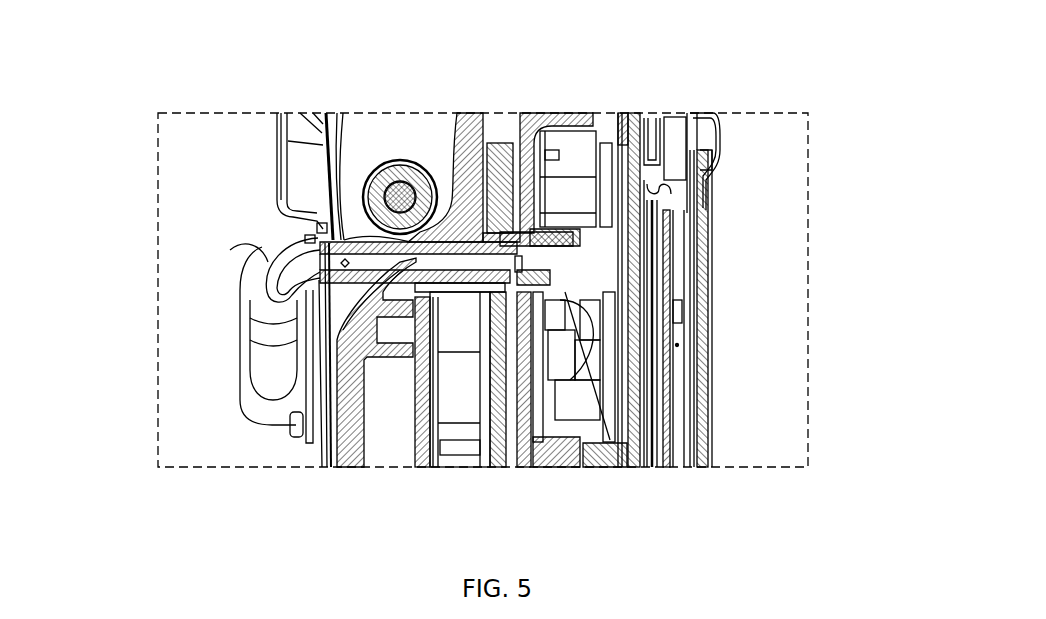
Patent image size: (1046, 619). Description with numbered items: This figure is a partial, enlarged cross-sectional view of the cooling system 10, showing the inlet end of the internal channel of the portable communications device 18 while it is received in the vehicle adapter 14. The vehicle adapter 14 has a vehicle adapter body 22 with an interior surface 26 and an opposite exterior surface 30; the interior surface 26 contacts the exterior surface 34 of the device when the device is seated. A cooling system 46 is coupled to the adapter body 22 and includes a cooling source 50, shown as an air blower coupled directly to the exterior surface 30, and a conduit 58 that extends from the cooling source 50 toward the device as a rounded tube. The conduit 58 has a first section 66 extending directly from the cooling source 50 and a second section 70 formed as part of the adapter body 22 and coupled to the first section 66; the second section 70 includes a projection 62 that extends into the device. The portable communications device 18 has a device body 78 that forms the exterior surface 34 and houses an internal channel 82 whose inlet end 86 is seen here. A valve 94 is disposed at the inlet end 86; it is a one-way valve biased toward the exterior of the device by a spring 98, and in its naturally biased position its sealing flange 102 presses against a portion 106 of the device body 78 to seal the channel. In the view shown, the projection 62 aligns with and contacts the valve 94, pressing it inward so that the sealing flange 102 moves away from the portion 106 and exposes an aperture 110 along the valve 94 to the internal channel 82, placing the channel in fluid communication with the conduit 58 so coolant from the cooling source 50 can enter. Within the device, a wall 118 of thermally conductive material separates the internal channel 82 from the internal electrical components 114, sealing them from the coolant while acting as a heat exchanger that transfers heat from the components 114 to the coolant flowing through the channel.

The cooling system 10 is at (111, 69).
The vehicle adapter 14 is at (360, 102).
The portable communications device 18 is at (690, 94).
The vehicle adapter body 22 is at (350, 460).
The interior surface 26 is at (478, 112).
The exterior surface 30 is at (327, 461).
The exterior surface 34 is at (512, 458).
The cooling system 46 is at (266, 236).
The cooling source 50 is at (238, 393).
The conduit 58 is at (264, 312).
The projection 62 is at (480, 218).
The first section 66 is at (258, 268).
The second section 70 is at (313, 218).
The device body 78 is at (531, 92).
The internal channel 82 is at (706, 322).
The inlet end 86 is at (600, 210).
The valve 94 is at (613, 458).
The spring 98 is at (576, 458).
The sealing flange 102 is at (577, 207).
The portion 106 is at (498, 112).
The aperture 110 is at (666, 458).
The internal electrical components 114 is at (703, 283).
The wall 118 is at (702, 382).